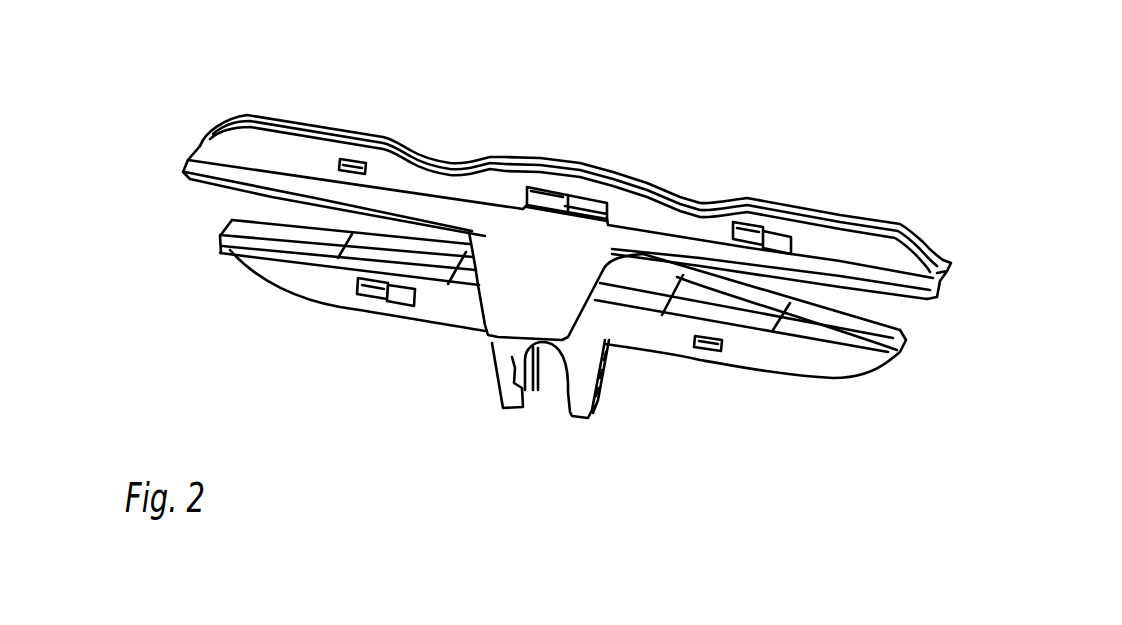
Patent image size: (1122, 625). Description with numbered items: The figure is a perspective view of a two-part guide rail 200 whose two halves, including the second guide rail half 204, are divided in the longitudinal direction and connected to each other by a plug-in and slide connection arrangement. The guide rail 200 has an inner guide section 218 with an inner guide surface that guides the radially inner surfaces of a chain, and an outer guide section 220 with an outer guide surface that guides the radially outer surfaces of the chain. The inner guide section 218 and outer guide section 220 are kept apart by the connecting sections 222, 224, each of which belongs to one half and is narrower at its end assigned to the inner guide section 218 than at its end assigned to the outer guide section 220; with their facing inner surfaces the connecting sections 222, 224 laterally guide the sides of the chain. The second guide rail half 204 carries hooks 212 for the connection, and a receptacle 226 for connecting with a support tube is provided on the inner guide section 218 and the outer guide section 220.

The two-part guide rail 200 is at (525, 152).
The connecting section 222 is at (660, 186).
The outer guide section 220 is at (211, 191).
The inner guide section 218 is at (296, 237).
The hooks 212 is at (957, 276).
The second guide rail half 204 is at (943, 295).
The connecting section 224 is at (507, 292).
The receptacle 226 is at (552, 396).